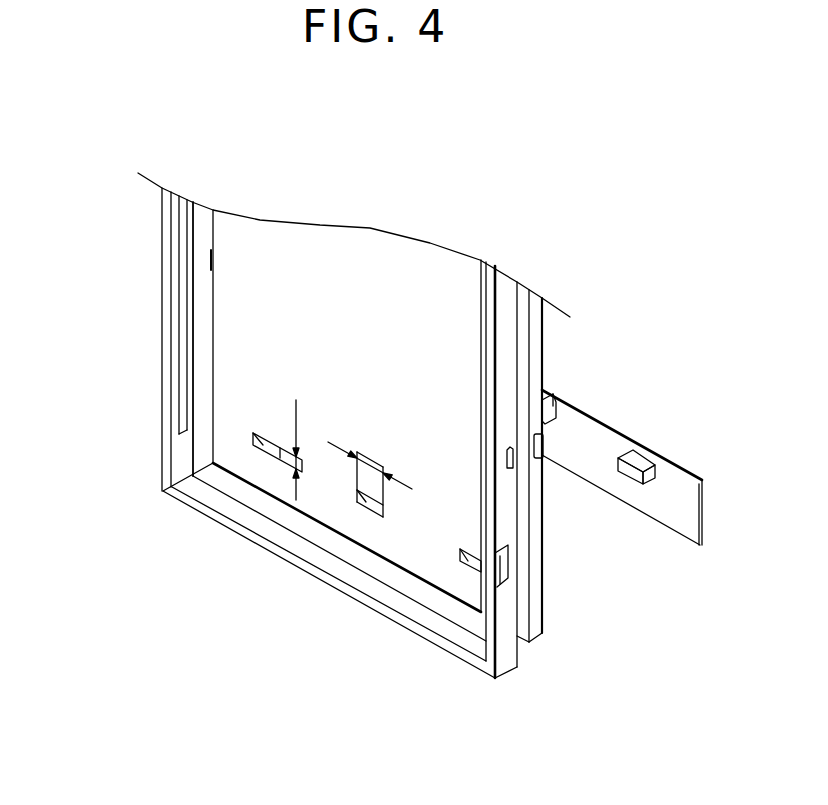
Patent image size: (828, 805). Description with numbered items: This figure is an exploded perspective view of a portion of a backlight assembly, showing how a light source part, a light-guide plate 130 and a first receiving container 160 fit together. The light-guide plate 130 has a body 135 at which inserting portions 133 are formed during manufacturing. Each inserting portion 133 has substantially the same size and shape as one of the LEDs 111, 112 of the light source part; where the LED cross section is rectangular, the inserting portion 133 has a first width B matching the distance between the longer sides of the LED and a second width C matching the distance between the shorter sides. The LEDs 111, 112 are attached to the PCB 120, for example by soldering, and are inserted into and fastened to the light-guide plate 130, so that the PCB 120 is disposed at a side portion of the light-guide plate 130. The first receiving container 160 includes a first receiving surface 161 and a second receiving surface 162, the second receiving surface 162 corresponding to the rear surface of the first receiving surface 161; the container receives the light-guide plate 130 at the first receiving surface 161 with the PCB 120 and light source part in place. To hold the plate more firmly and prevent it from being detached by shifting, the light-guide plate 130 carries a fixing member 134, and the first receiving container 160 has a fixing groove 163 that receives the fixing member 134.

The light emitting diode 111 is at (633, 455).
The light emitting diode 112 is at (546, 398).
The PCB 120 is at (681, 482).
The light-guide plate 130 is at (563, 555).
The inserting portion 133 is at (370, 503).
The fixing member 134 is at (544, 447).
The body 135 is at (332, 253).
The first receiving container 160 is at (500, 663).
The first receiving surface 161 is at (177, 379).
The second receiving surface 162 is at (195, 340).
The fixing groove 163 is at (507, 456).